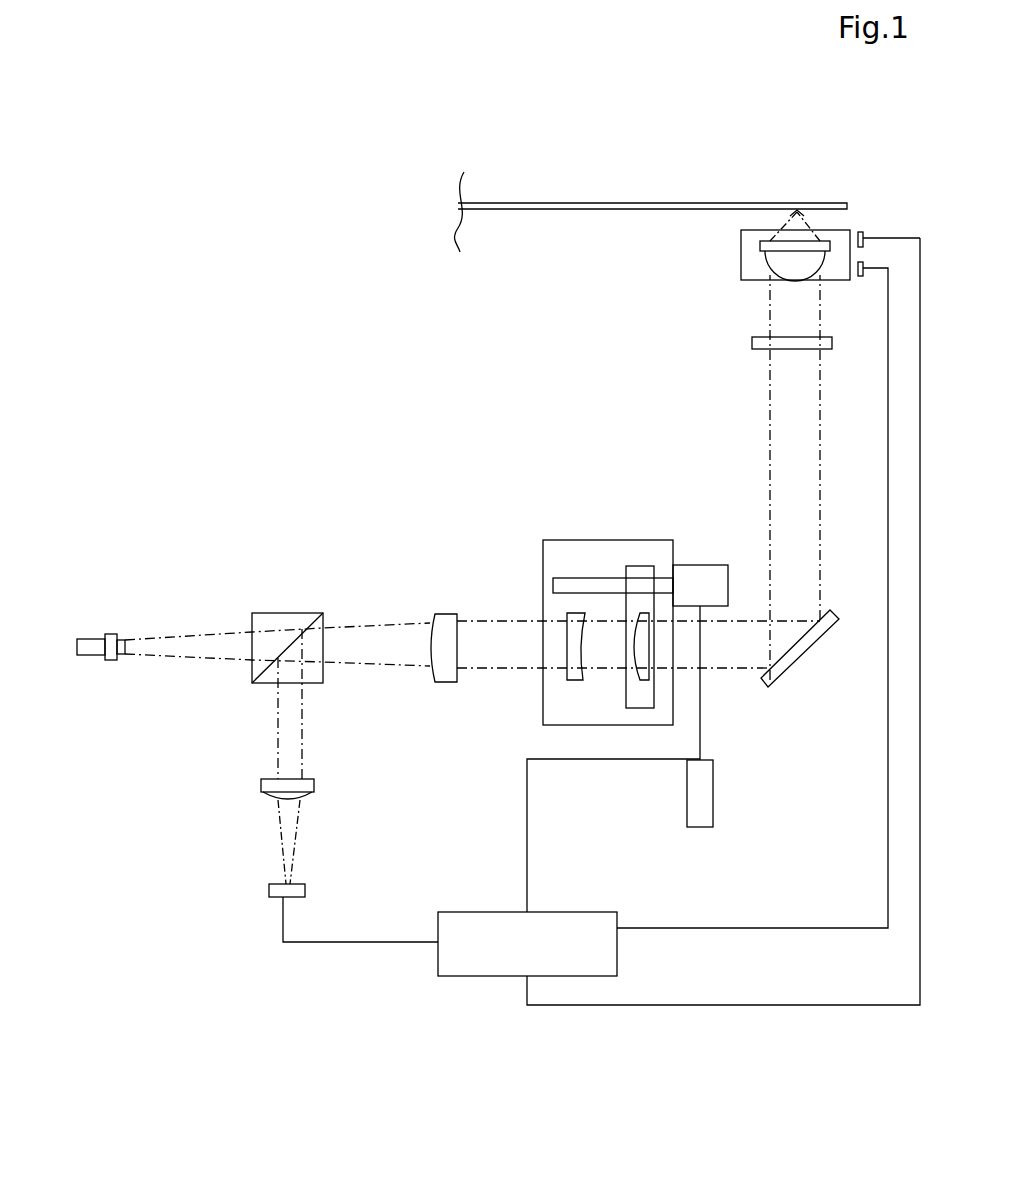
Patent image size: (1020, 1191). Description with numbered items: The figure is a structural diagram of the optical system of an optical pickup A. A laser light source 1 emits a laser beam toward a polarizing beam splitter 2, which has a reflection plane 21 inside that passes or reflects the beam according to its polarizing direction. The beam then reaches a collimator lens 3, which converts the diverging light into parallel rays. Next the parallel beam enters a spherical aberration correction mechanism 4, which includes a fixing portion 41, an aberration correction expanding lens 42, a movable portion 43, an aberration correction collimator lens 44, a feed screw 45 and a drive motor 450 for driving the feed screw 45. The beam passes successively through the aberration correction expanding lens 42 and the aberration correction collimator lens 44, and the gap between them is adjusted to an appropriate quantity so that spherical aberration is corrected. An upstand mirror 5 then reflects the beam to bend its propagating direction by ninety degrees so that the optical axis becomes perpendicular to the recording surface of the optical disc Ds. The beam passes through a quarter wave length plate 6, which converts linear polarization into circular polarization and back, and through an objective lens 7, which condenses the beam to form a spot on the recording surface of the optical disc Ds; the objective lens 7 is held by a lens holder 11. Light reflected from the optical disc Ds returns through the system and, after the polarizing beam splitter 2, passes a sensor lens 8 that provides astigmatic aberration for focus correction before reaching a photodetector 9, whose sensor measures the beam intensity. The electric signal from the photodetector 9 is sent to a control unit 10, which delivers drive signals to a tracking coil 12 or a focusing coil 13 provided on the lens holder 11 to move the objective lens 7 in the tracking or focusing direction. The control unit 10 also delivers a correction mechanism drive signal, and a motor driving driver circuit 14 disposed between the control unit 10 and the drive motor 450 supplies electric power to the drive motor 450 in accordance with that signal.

The optical pickup A is at (268, 170).
The optical disc Ds is at (513, 208).
The laser light source 1 is at (103, 660).
The polarizing beam splitter 2 is at (252, 613).
The reflection plane 21 is at (313, 627).
The collimator lens 3 is at (443, 668).
The spherical aberration correction mechanism 4 is at (622, 631).
The fixing portion 41 is at (543, 540).
The aberration correction expanding lens 42 is at (573, 678).
The movable portion 43 is at (640, 568).
The aberration correction collimator lens 44 is at (644, 680).
The feed screw 45 is at (606, 582).
The drive motor 450 is at (700, 585).
The upstand mirror 5 is at (802, 653).
The quarter wave length plate 6 is at (752, 342).
The objective lens 7 is at (762, 248).
The lens holder 11 is at (745, 272).
The tracking coil 12 is at (862, 230).
The focusing coil 13 is at (860, 278).
The motor driving driver circuit 14 is at (715, 798).
The sensor lens 8 is at (305, 792).
The photodetector 9 is at (277, 893).
The control unit 10 is at (455, 967).